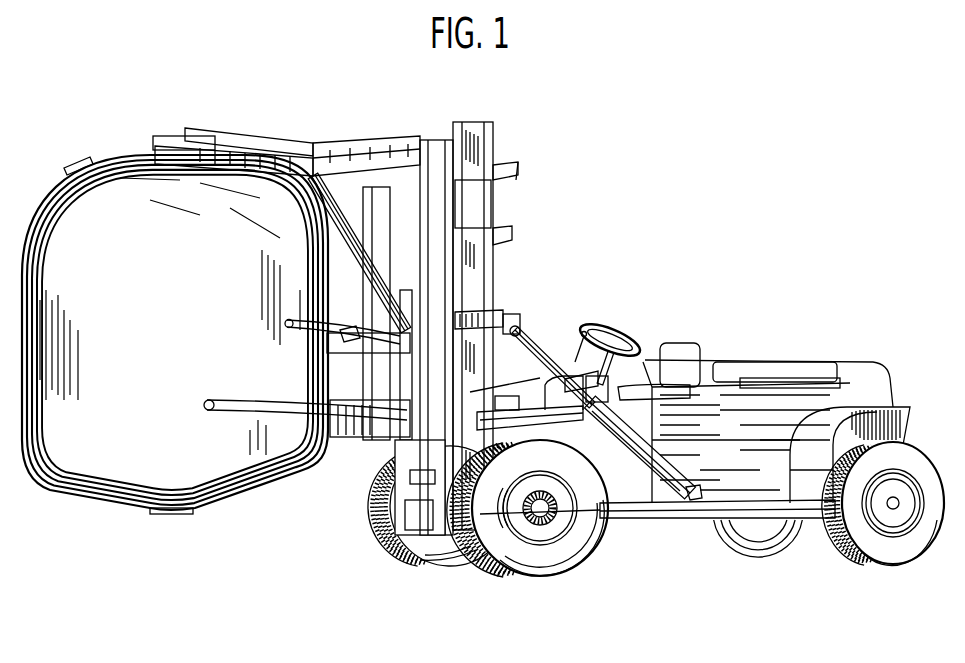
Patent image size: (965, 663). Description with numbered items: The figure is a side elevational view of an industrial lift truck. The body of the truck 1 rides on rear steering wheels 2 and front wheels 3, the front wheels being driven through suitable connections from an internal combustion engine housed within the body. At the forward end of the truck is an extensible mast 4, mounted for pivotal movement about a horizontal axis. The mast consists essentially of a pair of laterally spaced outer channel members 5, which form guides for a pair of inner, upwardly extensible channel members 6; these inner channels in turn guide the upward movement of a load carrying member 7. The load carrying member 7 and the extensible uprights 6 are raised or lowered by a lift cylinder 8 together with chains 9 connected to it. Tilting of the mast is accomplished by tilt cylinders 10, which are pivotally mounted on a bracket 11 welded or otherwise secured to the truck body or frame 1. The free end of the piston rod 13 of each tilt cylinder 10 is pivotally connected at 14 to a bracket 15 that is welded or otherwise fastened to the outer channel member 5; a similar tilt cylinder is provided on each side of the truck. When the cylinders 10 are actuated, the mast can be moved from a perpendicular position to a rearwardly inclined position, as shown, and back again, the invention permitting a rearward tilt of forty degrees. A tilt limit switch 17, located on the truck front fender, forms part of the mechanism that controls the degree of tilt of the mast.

The body of an industrial truck 1 is at (740, 490).
The rear steering wheels 2 is at (852, 562).
The front wheels 3 is at (581, 548).
The mast 4 is at (520, 166).
The outer channel members 5 is at (488, 211).
The inner channel members 6 is at (488, 141).
The load carrying member 7 is at (246, 143).
The lift cylinder 8 is at (428, 456).
The chains 9 is at (444, 140).
The tilt cylinders 10 is at (656, 488).
The bracket 11 is at (695, 498).
The piston rod 13 is at (540, 347).
The pivotal connection 14 is at (520, 324).
The bracket 15 is at (505, 316).
The tilt limit switch 17 is at (506, 398).